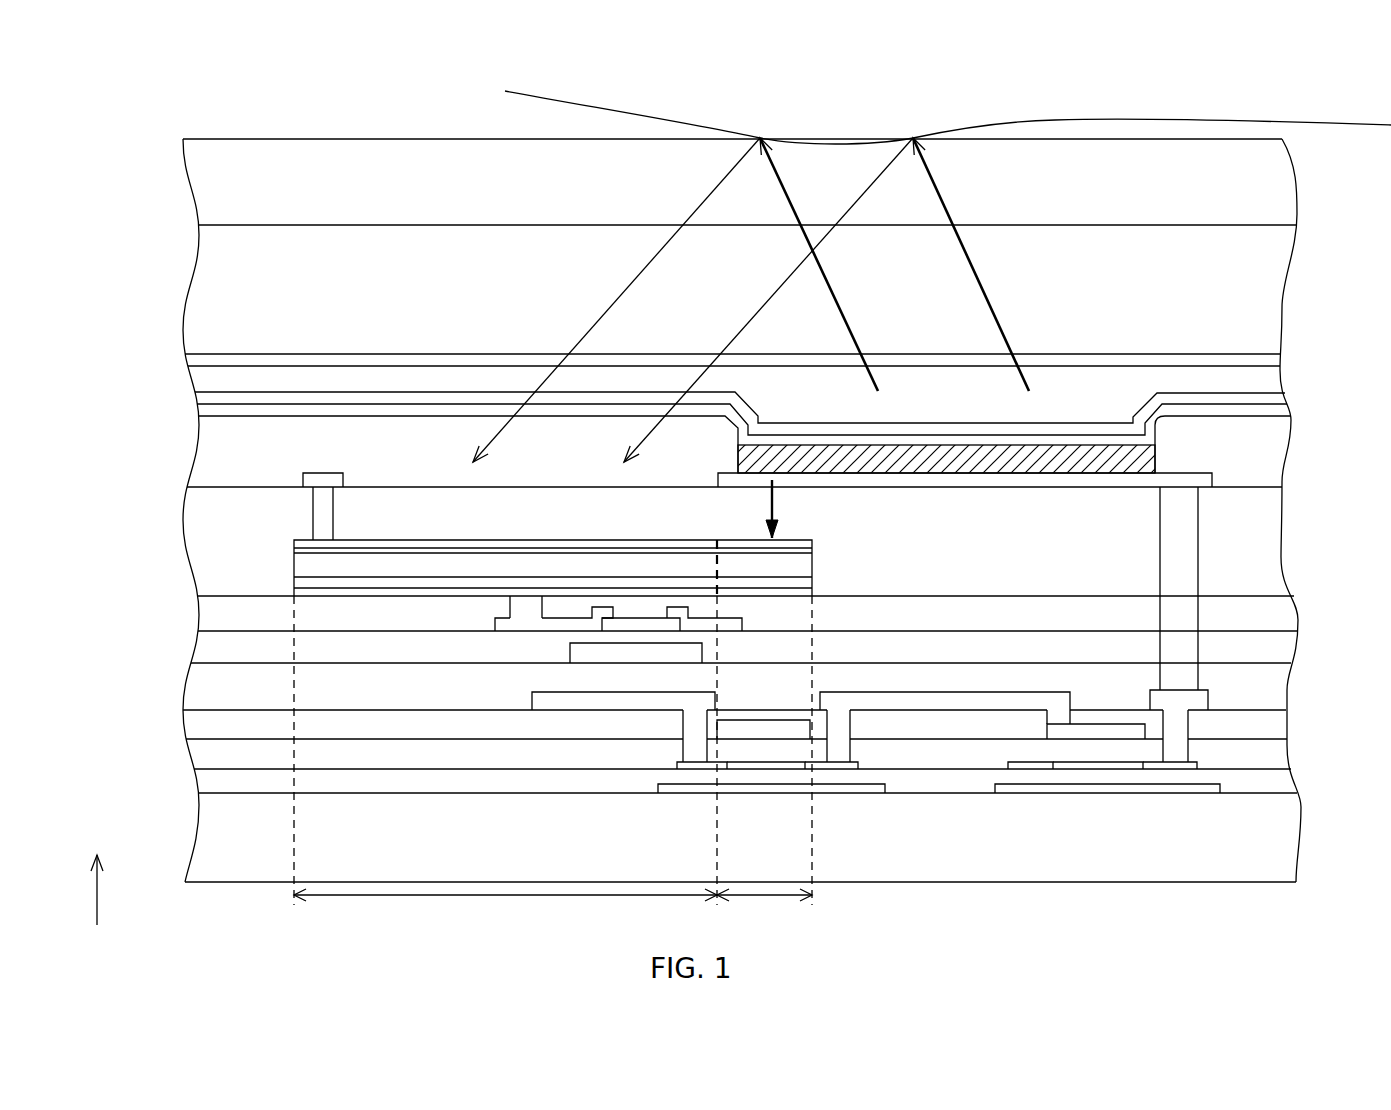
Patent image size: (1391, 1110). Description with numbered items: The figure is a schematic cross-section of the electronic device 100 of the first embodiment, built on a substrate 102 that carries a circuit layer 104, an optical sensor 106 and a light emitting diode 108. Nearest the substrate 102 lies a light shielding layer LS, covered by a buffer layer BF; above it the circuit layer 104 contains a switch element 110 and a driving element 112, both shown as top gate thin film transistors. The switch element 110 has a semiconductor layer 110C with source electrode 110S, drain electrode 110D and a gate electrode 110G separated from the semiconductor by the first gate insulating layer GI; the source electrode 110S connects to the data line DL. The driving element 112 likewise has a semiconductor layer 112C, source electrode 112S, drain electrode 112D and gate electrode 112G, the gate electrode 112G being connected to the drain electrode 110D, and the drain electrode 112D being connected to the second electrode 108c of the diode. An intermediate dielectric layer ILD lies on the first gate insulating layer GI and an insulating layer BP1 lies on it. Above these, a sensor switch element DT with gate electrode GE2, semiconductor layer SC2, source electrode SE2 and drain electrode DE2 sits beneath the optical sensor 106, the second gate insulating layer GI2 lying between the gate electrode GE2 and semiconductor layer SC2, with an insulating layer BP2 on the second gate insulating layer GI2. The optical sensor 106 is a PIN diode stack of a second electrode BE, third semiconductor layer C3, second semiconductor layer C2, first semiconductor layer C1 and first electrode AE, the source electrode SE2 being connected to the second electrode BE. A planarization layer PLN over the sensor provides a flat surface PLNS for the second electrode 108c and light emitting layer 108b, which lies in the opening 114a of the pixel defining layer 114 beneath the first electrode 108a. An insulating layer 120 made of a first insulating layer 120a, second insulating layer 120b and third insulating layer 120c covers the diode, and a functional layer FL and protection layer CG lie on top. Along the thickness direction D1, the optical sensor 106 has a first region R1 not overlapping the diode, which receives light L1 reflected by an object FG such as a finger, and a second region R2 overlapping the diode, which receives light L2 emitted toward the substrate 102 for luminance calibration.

The electronic device 100 is at (150, 138).
The substrate 102 is at (365, 853).
The circuit layer 104 is at (735, 699).
The optical sensor 106 is at (416, 557).
The light emitting diode 108 is at (1054, 486).
The first electrode 108a is at (1265, 408).
The light emitting layer 108b is at (1155, 457).
The second electrode 108c is at (1173, 480).
The switch element 110 is at (859, 710).
The source electrode 110S is at (690, 770).
The semiconductor layer 110C is at (757, 770).
The drain electrode 110D is at (845, 770).
The gate electrode 110G is at (785, 739).
The driving element 112 is at (1102, 710).
The source electrode 112S is at (1023, 770).
The semiconductor layer 112C is at (1095, 770).
The drain electrode 112D is at (1180, 770).
The gate electrode 112G is at (1122, 739).
The pixel defining layer 114 is at (442, 425).
The opening 114a is at (736, 434).
The insulating layer 120 is at (655, 392).
The first insulating layer 120a is at (230, 400).
The second insulating layer 120b is at (222, 377).
The third insulating layer 120c is at (222, 355).
The object FG is at (540, 102).
The protection layer CG is at (318, 197).
The functional layer FL is at (312, 313).
The light L1 is at (618, 298).
The light L2 is at (775, 505).
The first electrode AE is at (294, 540).
The first semiconductor layer C1 is at (294, 552).
The second semiconductor layer C2 is at (294, 566).
The third semiconductor layer C3 is at (294, 580).
The second electrode BE is at (294, 592).
The source electrode SE2 is at (580, 625).
The semiconductor layer SC2 is at (638, 625).
The drain electrode DE2 is at (727, 620).
The gate electrode GE2 is at (578, 650).
The data line DL is at (540, 697).
The sensor switch element DT is at (627, 670).
The light shielding layer LS is at (657, 787).
The flat surface PLNS is at (1260, 487).
The planarization layer PLN is at (1270, 562).
The insulating layer BP2 is at (1270, 612).
The second gate insulating layer GI2 is at (1270, 648).
The insulating layer BP1 is at (1270, 690).
The intermediate dielectric layer ILD is at (1270, 723).
The first gate insulating layer GI is at (1270, 756).
The buffer layer BF is at (1270, 788).
The thickness direction D1 is at (120, 890).
The first region R1 is at (505, 763).
The second region R2 is at (764, 763).